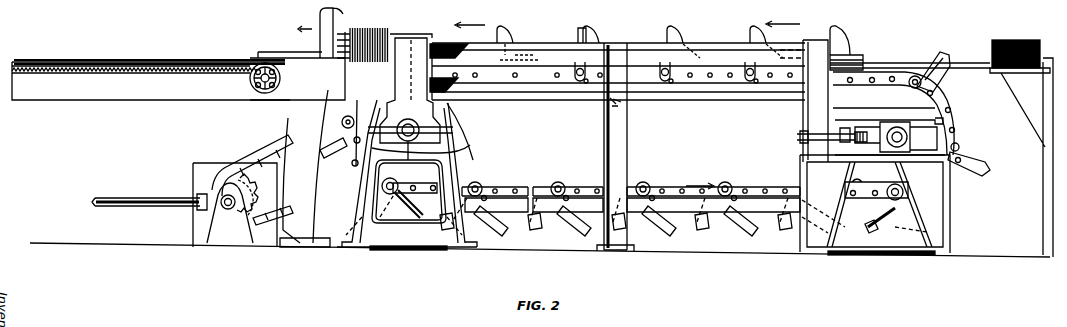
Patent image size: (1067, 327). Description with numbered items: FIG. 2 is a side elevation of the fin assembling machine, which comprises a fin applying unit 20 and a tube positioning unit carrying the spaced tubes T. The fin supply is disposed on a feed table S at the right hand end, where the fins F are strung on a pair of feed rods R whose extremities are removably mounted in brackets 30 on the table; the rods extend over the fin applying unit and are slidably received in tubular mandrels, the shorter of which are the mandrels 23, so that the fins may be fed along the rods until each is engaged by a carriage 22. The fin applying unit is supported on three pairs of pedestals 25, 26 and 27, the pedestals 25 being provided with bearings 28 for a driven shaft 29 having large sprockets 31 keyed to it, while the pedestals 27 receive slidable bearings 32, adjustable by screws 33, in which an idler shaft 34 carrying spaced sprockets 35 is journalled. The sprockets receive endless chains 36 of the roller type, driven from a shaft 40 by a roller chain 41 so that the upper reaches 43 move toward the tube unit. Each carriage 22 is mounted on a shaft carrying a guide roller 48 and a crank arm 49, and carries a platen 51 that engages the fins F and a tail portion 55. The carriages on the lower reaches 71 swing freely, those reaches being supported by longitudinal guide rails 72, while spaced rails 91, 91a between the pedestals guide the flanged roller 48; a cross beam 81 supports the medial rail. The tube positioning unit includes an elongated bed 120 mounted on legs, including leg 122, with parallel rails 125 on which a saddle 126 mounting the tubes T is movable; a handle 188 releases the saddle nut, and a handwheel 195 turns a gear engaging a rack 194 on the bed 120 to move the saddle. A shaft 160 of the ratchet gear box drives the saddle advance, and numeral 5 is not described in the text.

The elongated bed 120 is at (151, 81).
The rack 194 is at (76, 70).
The parallel rails 125 is at (148, 62).
The handwheel 195 is at (258, 63).
The leg 122 is at (297, 152).
The handle 188 is at (287, 52).
The saddle 126 is at (320, 24).
The tubes T is at (347, 36).
The machine 5 is at (409, 6).
The pedestals 25 is at (390, 240).
The bearings 28 is at (447, 148).
The driven shaft 29 is at (440, 132).
The large sprockets 31 is at (352, 162).
The shaft 160 is at (148, 198).
The shaft 40 is at (222, 205).
The roller chain 41 is at (257, 158).
The fin applying unit 20 is at (704, 104).
The platen 51 is at (581, 30).
The carriages 22 is at (594, 28).
The mandrels 23 is at (703, 46).
The guide roller 48 is at (580, 86).
The crank arm 49 is at (665, 85).
The upper reaches of the chains 43 is at (748, 85).
The cross beam 81 is at (614, 108).
The rail 91 is at (796, 60).
The rail 91a is at (796, 95).
The pedestals 26 is at (620, 248).
The endless chains 36 is at (760, 190).
The longitudinal guide rails 72 is at (690, 215).
The lower reaches of the chain 71 is at (592, 192).
The tail portion 55 is at (735, 226).
The screws 33 is at (797, 136).
The idler shaft 34 is at (902, 130).
The slidable bearings 32 is at (958, 147).
The sprockets 35 is at (910, 109).
The feed rods R is at (880, 62).
The fin F is at (905, 70).
The brackets 30 is at (1047, 60).
The feed table S is at (1000, 76).
The pedestals 27 is at (818, 248).